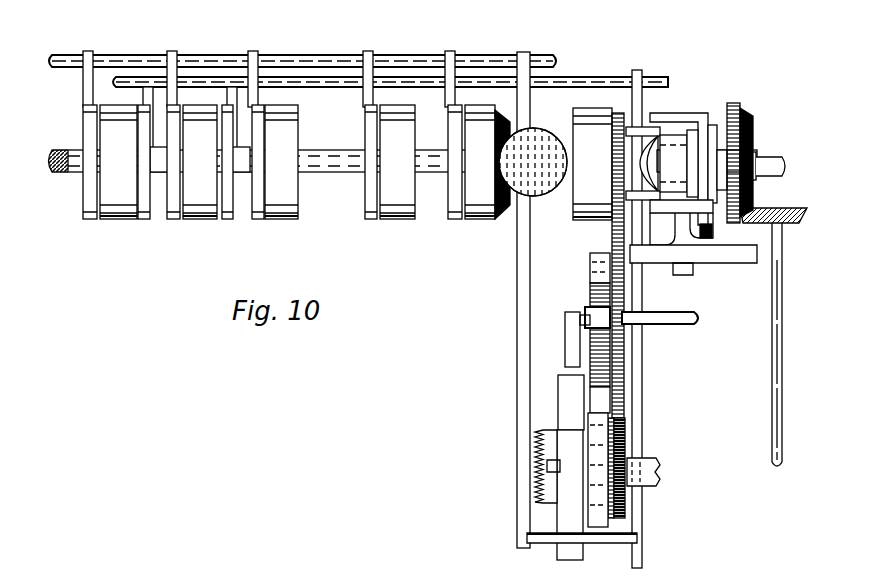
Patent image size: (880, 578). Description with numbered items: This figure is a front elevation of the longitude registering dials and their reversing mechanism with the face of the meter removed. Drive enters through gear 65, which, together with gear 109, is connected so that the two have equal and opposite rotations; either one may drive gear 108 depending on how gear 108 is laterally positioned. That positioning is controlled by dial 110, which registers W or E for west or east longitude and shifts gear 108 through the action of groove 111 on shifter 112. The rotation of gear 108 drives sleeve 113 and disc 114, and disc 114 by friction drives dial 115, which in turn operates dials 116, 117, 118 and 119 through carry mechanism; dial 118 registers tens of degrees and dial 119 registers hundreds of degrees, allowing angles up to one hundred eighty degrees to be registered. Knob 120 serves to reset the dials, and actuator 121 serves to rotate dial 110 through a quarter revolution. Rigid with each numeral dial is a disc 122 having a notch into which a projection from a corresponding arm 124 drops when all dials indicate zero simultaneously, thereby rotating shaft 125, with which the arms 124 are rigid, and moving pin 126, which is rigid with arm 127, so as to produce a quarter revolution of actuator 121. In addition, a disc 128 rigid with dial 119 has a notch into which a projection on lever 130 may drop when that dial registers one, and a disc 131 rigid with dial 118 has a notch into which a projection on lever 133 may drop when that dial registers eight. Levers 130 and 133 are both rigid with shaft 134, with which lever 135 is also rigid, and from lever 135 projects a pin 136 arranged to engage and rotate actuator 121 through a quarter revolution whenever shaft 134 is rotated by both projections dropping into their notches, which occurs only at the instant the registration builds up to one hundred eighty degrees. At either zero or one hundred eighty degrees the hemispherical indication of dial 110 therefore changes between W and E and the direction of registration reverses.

The gear 65 is at (755, 124).
The gear 108 is at (737, 105).
The gear 109 is at (713, 232).
The dial 110 is at (582, 221).
The groove 111 is at (649, 163).
The shifter 112 is at (679, 112).
The sleeve 113 is at (765, 161).
The disc 114 is at (515, 108).
The dial 115 is at (490, 221).
The dial 116 is at (408, 221).
The dial 117 is at (284, 222).
The dial 118 is at (186, 222).
The dial 119 is at (106, 222).
The knob 120 is at (533, 130).
The actuator 121 is at (606, 440).
The disc 122 is at (90, 221).
The arm 124 is at (170, 52).
The shaft 125 is at (318, 57).
The pin 126 is at (545, 546).
The arm 127 is at (530, 54).
The disc 128 is at (144, 221).
The lever 130 is at (145, 98).
The disc 131 is at (228, 221).
The lever 133 is at (230, 98).
The shaft 134 is at (590, 78).
The lever 135 is at (640, 73).
The pin 136 is at (608, 546).